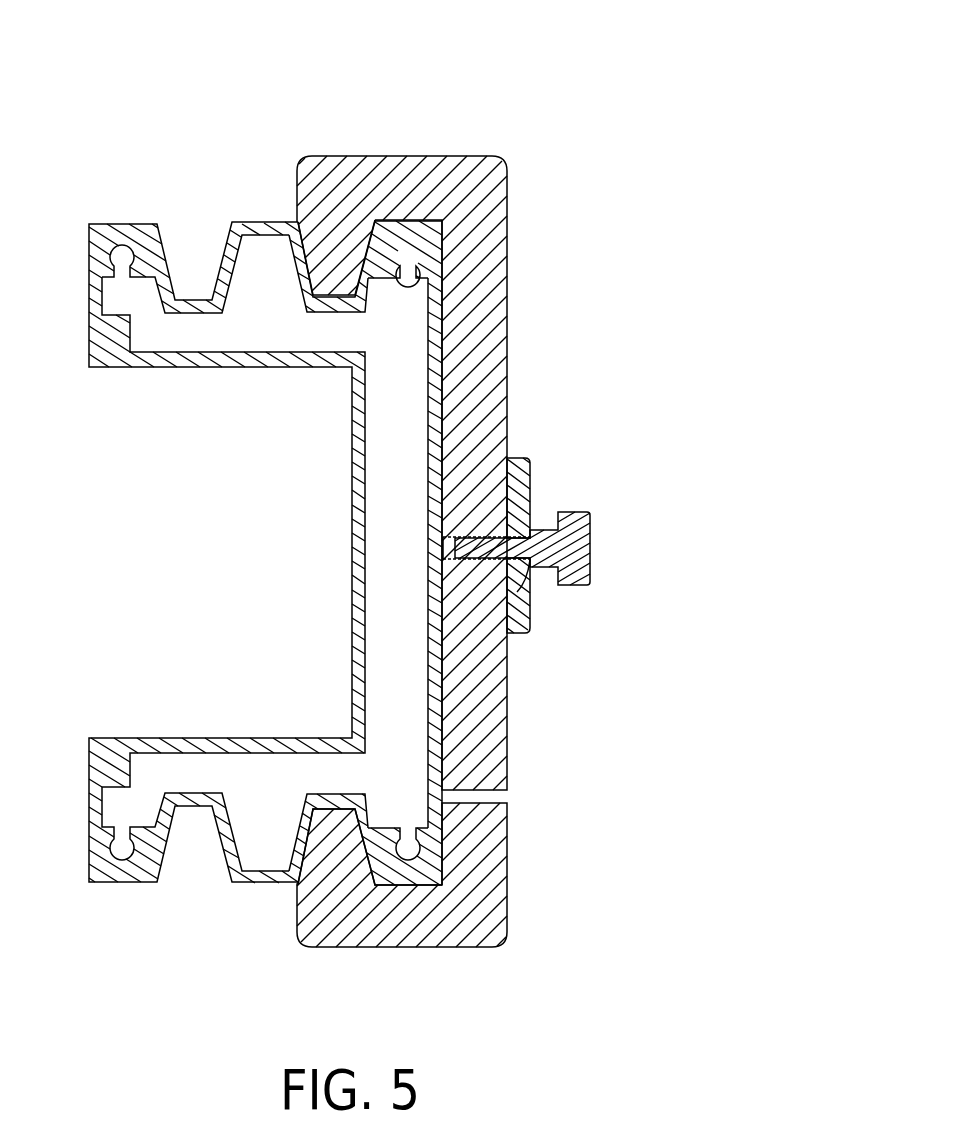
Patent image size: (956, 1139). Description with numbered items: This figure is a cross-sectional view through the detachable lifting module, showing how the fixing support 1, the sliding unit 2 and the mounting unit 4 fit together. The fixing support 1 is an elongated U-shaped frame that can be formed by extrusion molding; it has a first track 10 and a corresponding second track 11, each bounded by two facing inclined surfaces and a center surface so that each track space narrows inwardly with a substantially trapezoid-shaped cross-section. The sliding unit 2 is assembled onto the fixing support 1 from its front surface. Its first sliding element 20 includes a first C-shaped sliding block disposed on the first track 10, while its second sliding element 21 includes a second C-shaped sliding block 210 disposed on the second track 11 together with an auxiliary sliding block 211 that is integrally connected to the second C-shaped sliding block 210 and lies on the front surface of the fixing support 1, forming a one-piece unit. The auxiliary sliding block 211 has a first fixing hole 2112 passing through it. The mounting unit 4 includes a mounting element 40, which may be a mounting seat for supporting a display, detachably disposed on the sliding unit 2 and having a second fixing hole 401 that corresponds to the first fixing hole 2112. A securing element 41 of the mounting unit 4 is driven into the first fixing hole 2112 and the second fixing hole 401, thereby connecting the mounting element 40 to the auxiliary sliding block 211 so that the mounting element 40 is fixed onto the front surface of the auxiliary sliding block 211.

The fixing support 1 is at (351, 560).
The first track 10 is at (430, 862).
The second track 11 is at (440, 257).
The sliding unit 2 is at (554, 29).
The first sliding element 20 is at (513, 815).
The second sliding element 21 is at (584, 94).
The second C-shaped sliding block 210 is at (428, 182).
The auxiliary sliding block 211 is at (481, 235).
The first fixing hole 2112 is at (450, 543).
The mounting unit 4 is at (656, 422).
The mounting element 40 is at (533, 456).
The second fixing hole 401 is at (531, 586).
The securing element 41 is at (599, 522).